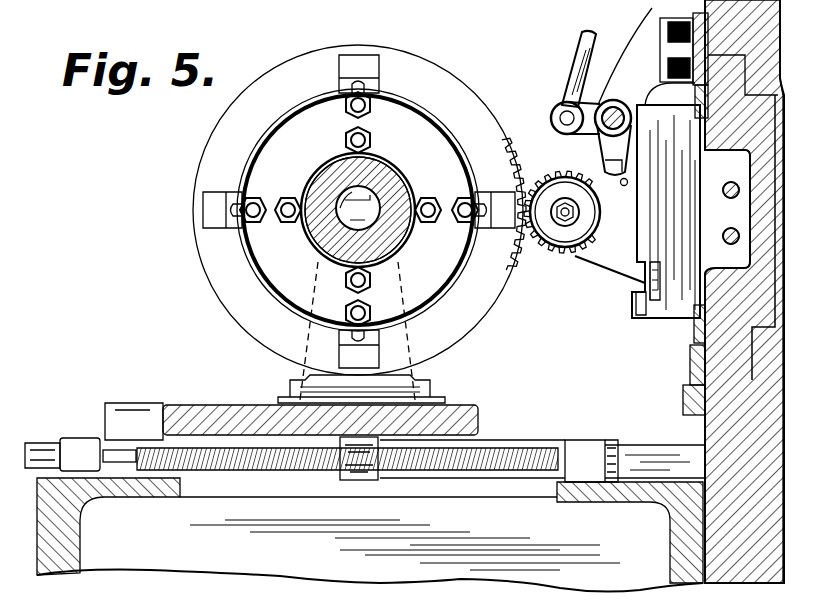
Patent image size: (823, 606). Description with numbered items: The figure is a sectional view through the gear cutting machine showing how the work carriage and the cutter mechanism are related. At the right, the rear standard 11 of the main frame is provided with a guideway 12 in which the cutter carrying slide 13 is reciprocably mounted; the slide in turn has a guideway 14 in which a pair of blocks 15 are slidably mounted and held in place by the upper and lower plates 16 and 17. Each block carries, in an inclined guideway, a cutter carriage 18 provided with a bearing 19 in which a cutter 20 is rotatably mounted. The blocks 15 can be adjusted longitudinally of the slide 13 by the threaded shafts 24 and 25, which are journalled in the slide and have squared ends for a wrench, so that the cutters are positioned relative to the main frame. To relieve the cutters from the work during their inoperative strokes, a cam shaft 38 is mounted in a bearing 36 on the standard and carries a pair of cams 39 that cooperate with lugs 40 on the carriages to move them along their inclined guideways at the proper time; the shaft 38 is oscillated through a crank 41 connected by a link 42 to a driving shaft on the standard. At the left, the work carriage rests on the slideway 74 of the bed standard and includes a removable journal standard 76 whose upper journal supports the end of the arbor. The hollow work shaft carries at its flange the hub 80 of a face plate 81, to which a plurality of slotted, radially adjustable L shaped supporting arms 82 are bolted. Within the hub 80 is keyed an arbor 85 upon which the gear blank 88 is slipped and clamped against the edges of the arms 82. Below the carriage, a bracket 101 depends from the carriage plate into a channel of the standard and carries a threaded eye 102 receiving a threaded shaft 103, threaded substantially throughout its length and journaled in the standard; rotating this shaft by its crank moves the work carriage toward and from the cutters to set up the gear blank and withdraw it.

The rear standard 11 is at (748, 570).
The guideway 12 is at (690, 383).
The cutter carrying slide 13 is at (700, 355).
The guideway 14 is at (705, 42).
The blocks 15 is at (667, 200).
The upper plate 16 is at (694, 328).
The lower plate 17 is at (689, 101).
The cutter carriage 18 is at (600, 165).
The bearing 19 is at (722, 13).
The cutter 20 is at (552, 262).
The threaded shaft 24 is at (729, 182).
The threaded shaft 25 is at (729, 228).
The bearing 36 is at (634, 52).
The cam shaft 38 is at (614, 107).
The cams 39 is at (614, 150).
The lugs 40 is at (617, 185).
The crank 41 is at (595, 105).
The link 42 is at (596, 34).
The slideway 74 is at (180, 412).
The removable journal standard 76 is at (292, 385).
The hub 80 is at (320, 232).
The face plate 81 is at (284, 134).
The L shaped supporting arms 82 is at (346, 62).
The arbor 85 is at (332, 198).
The gear blank 88 is at (445, 80).
The bracket 101 is at (372, 480).
The threaded eye 102 is at (347, 480).
The threaded shaft 103 is at (118, 450).